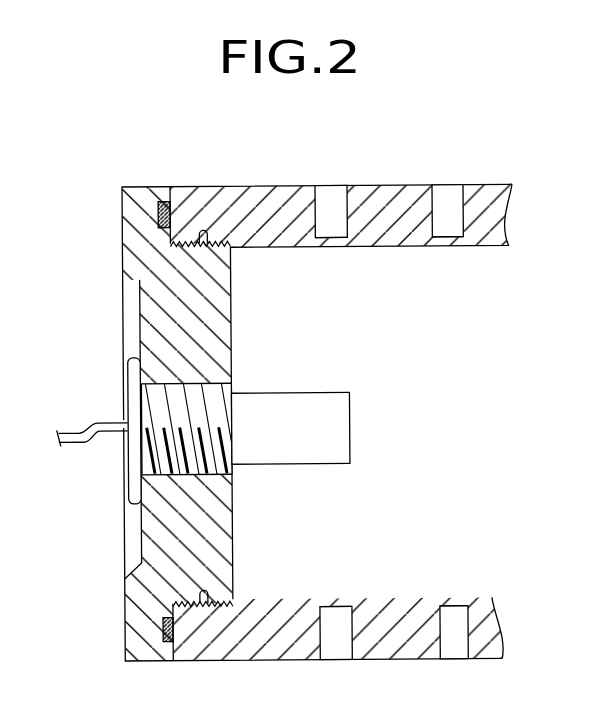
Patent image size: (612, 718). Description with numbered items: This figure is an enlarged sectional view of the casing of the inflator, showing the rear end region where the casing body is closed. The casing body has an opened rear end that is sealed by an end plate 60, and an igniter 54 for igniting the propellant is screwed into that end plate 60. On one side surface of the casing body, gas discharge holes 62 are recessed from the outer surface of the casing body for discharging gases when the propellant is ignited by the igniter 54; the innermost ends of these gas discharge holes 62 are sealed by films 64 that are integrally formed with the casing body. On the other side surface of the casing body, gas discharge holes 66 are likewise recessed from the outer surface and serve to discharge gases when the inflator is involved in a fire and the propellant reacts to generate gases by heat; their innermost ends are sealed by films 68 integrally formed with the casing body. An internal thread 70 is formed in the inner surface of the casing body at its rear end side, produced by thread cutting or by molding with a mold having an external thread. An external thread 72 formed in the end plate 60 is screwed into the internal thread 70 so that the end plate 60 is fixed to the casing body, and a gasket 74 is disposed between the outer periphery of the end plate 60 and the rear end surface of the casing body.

The igniter 54 is at (278, 382).
The end plate 60 is at (139, 540).
The gas discharge holes 62 is at (333, 198).
The films 64 is at (335, 249).
The gas discharge holes 66 is at (333, 651).
The films 68 is at (331, 599).
The internal thread 70 is at (200, 603).
The external thread 72 is at (200, 237).
The gasket 74 is at (160, 633).